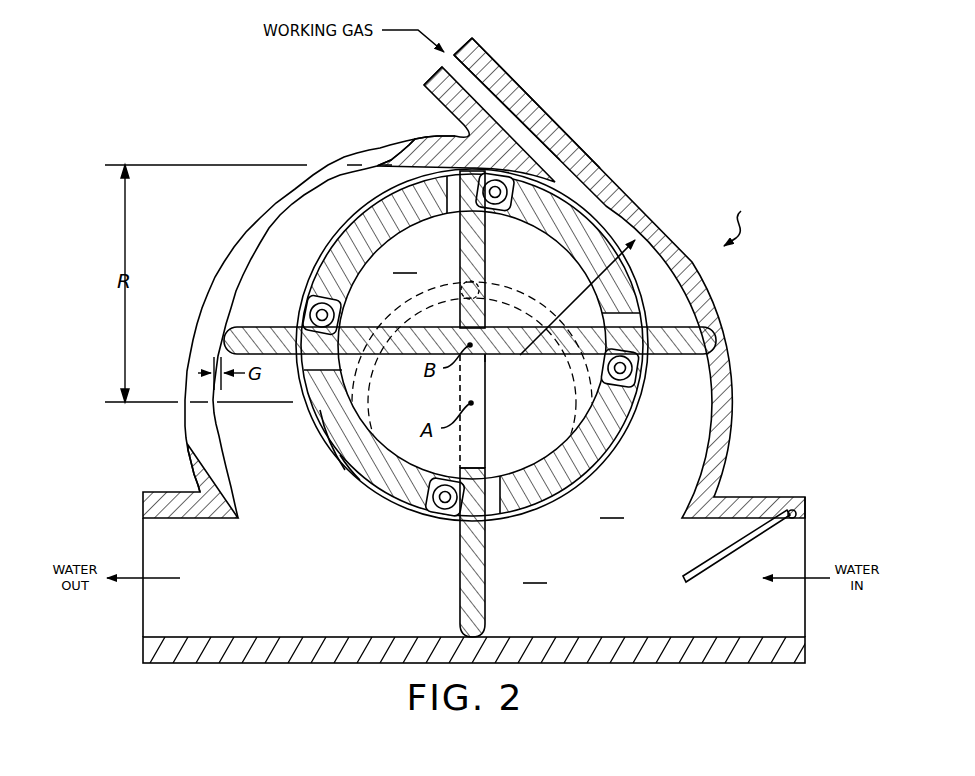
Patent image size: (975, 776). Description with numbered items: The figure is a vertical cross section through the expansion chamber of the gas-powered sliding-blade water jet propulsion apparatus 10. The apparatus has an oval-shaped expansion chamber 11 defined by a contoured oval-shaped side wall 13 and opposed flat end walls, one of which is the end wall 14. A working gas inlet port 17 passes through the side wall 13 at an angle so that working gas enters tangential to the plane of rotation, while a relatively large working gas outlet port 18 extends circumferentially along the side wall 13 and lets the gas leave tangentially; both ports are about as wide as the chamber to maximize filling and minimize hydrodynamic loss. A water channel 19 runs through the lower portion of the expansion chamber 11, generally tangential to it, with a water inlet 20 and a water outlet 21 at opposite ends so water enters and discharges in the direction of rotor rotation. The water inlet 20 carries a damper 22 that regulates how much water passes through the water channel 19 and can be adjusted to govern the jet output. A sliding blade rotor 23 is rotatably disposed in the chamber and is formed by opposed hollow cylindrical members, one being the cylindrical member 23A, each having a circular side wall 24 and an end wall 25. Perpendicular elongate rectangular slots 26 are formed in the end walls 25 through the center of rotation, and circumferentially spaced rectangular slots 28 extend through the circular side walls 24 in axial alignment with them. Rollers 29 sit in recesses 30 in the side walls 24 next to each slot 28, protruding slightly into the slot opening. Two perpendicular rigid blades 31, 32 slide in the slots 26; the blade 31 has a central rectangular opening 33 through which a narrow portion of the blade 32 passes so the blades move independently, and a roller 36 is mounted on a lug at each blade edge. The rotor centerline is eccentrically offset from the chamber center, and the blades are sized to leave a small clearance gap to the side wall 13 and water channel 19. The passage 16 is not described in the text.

The sliding-blade water jet propulsion apparatus 10 is at (745, 220).
The expansion chamber 11 is at (735, 402).
The side wall 13 is at (705, 420).
The end wall 14 is at (611, 507).
The gas passage 16 is at (530, 298).
The working gas inlet port 17 is at (518, 128).
The working gas outlet port 18 is at (192, 422).
The water channel 19 is at (534, 572).
The water inlet 20 is at (793, 633).
The water outlet 21 is at (143, 628).
The damper 22 is at (703, 563).
The sliding blade rotor 23 is at (353, 482).
The hollow cylindrical member 23A is at (343, 462).
The circular side wall 24 is at (330, 422).
The end wall 25 is at (404, 262).
The elongate rectangular slots 26 is at (485, 220).
The rectangular slots 28 is at (618, 322).
The rollers 29 is at (502, 185).
The recesses 30 is at (510, 195).
The blade 31 is at (460, 597).
The blade 32 is at (690, 343).
The central rectangular opening 33 is at (485, 368).
The roller 36 is at (392, 306).